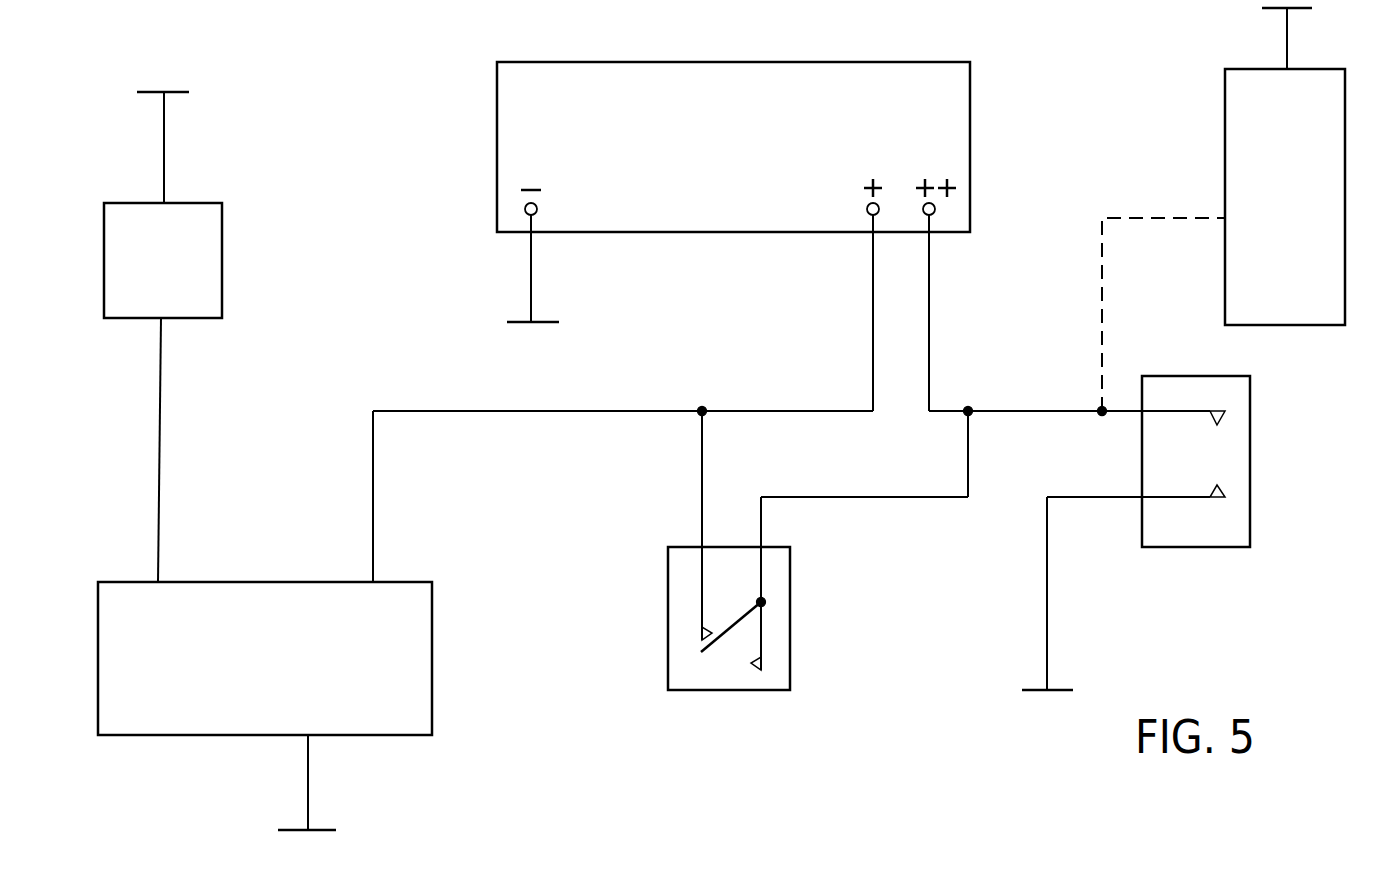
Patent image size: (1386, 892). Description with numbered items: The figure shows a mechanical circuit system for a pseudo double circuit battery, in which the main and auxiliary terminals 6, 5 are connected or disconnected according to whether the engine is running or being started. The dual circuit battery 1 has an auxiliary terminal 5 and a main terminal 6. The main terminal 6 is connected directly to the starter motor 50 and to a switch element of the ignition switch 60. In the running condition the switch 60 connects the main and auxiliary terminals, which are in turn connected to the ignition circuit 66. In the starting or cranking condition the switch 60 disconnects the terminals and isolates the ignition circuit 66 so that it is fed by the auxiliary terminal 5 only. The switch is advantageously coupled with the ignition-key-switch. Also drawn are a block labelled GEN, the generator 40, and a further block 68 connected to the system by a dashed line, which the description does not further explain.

The dual circuit battery 1 is at (867, 62).
The auxiliary terminal 5 is at (951, 210).
The main terminal 6 is at (853, 210).
The generator 40 is at (223, 270).
The starter motor 50 is at (302, 582).
The ignition switch 60 is at (790, 618).
The ignition circuit 66 is at (1250, 490).
The load 68 is at (1225, 105).